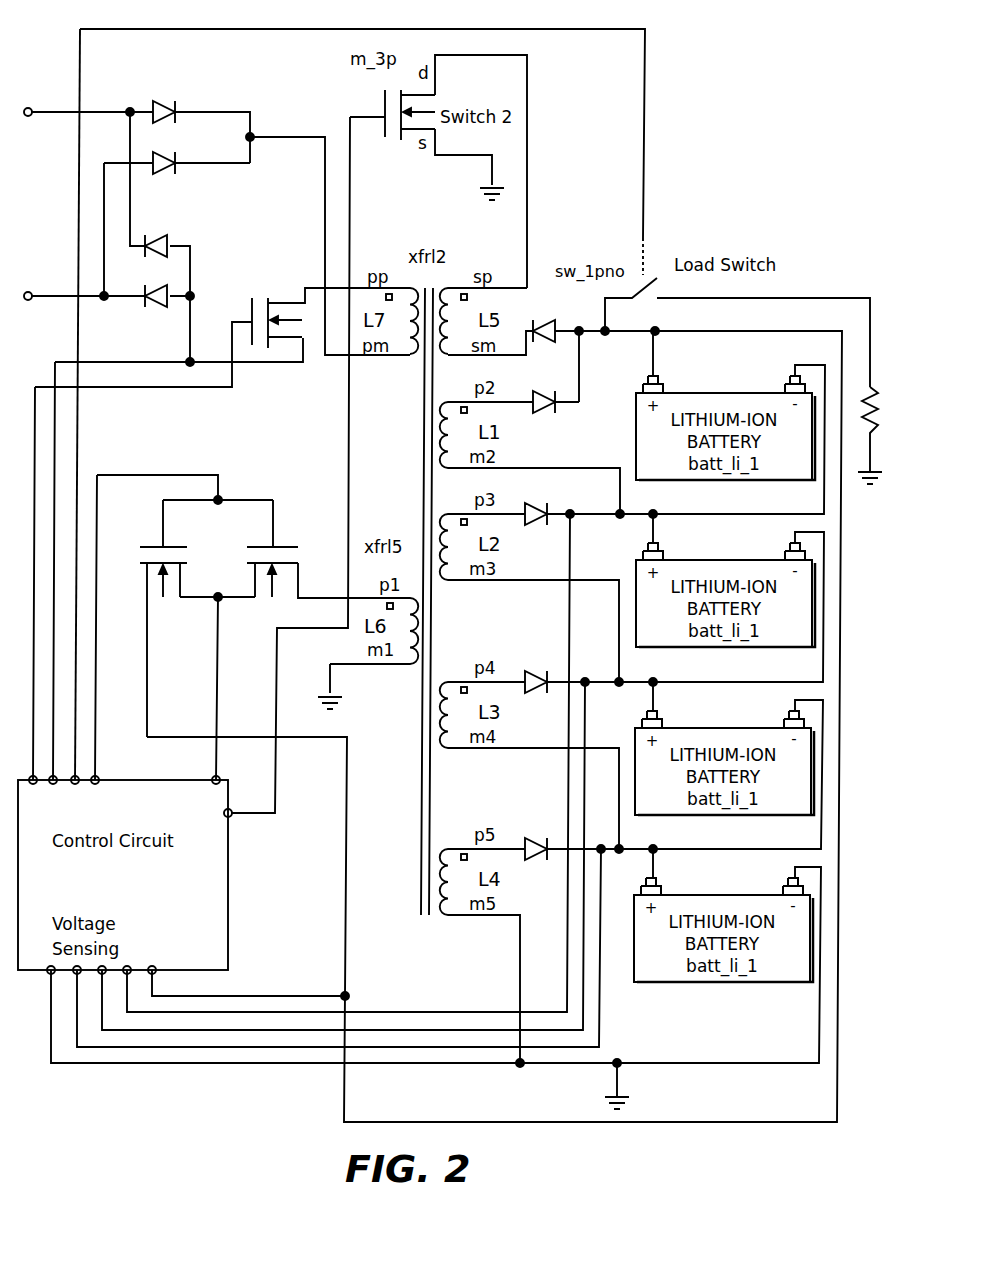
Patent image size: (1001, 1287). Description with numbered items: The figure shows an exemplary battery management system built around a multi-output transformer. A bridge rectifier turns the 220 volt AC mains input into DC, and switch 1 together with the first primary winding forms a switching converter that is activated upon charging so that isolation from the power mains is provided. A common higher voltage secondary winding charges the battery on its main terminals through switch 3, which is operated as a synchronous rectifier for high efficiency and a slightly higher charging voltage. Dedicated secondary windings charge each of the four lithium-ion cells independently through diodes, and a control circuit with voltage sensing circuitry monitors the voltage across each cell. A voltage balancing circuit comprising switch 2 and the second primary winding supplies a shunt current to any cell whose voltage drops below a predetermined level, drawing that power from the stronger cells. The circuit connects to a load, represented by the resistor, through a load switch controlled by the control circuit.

The switch 2 is at (862, 428).
The switch 1 is at (259, 294).
The switch 3 is at (252, 627).
The 220V AC 220 is at (76, 204).